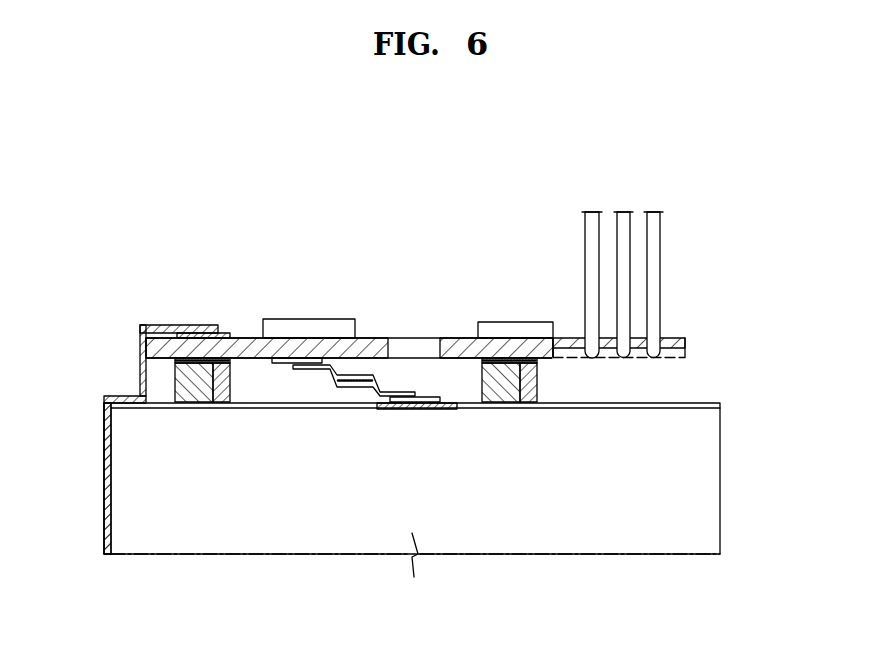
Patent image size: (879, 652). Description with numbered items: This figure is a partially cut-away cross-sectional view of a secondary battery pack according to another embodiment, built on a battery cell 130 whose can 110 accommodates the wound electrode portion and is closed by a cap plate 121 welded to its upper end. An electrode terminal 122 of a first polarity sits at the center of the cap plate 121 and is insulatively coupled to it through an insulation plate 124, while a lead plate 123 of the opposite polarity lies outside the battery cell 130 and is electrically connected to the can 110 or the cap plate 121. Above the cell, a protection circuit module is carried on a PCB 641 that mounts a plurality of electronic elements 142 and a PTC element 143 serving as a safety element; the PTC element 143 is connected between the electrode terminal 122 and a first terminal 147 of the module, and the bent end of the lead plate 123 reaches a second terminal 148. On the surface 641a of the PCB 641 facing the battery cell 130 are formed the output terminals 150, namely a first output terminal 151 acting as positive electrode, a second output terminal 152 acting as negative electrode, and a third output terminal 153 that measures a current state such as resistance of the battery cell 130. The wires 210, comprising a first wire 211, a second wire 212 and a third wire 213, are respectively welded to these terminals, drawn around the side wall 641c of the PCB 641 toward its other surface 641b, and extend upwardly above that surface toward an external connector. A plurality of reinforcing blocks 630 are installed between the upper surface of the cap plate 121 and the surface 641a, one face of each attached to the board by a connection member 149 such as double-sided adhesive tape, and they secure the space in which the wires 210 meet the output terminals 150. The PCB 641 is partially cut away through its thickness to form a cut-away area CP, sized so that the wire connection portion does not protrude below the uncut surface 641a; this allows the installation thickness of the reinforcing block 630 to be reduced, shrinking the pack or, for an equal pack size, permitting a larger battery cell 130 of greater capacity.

The can 110 is at (435, 487).
The cap plate 121 is at (113, 396).
The electrode terminal 122 is at (427, 393).
The lead plate 123 is at (105, 492).
The insulation plate 124 is at (385, 409).
The battery cell 130 is at (742, 438).
The electronic elements 142 is at (308, 324).
The PTC element 143 is at (389, 376).
The first terminal 147 is at (290, 368).
The second terminal 148 is at (177, 363).
The connection member 149 is at (222, 380).
The output terminals 150 is at (686, 303).
The first output terminal 151 is at (598, 350).
The second output terminal 152 is at (662, 345).
The third output terminal 153 is at (628, 350).
The wires 210 is at (625, 221).
The first wire 211 is at (593, 222).
The second wire 212 is at (666, 249).
The third wire 213 is at (621, 222).
The reinforcing blocks 630 is at (195, 388).
The PCB 641 is at (155, 287).
The surface of the PCB 641a is at (140, 372).
The other surface of the PCB 641b is at (236, 345).
The side wall of the PCB 641c is at (163, 340).
The cut-away area CP is at (650, 371).